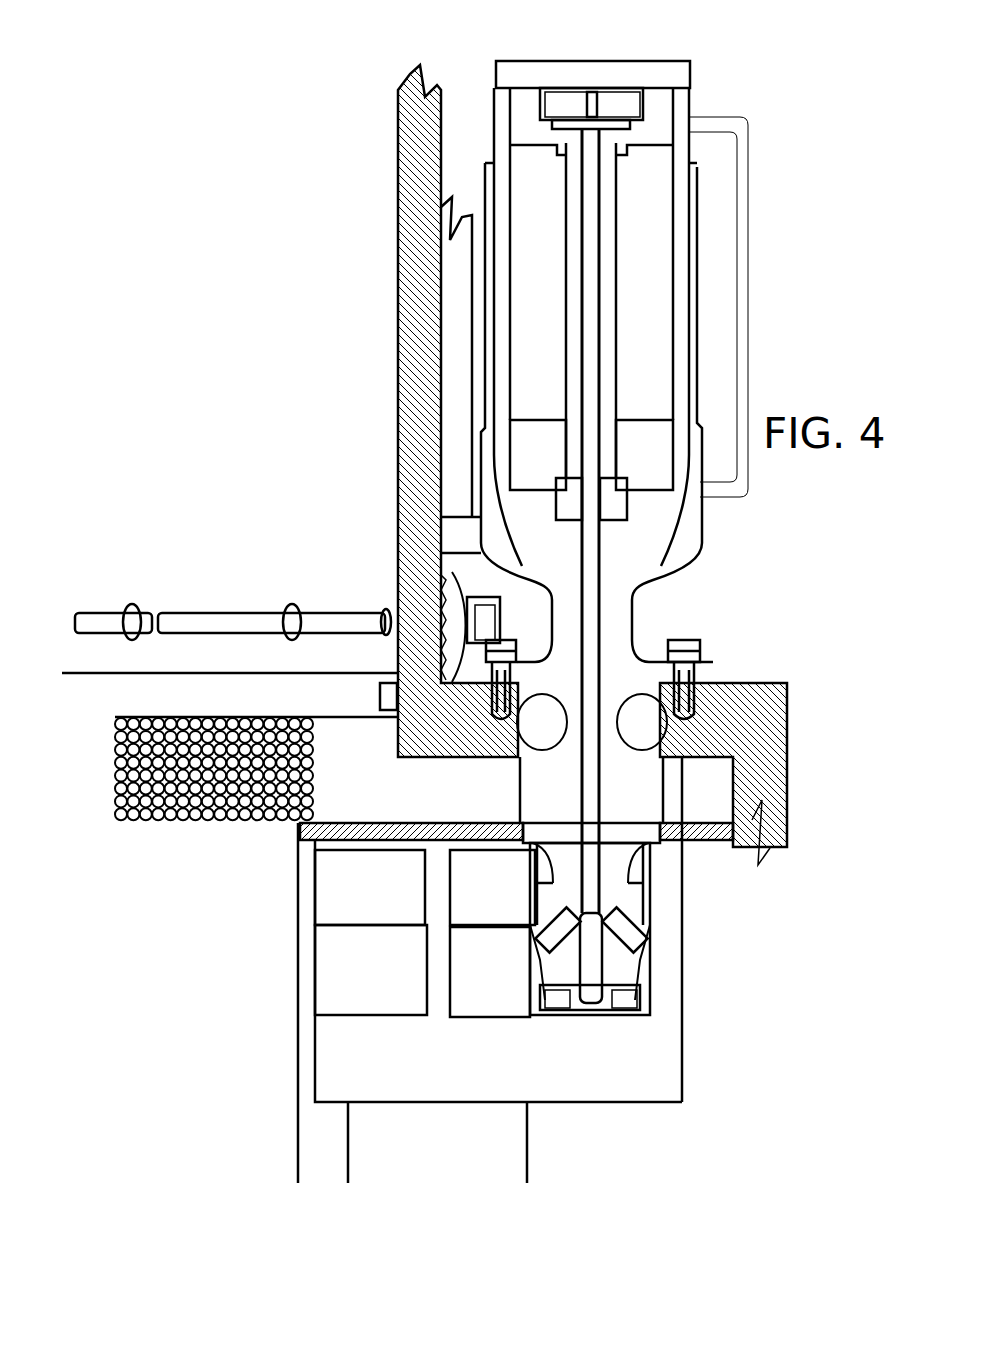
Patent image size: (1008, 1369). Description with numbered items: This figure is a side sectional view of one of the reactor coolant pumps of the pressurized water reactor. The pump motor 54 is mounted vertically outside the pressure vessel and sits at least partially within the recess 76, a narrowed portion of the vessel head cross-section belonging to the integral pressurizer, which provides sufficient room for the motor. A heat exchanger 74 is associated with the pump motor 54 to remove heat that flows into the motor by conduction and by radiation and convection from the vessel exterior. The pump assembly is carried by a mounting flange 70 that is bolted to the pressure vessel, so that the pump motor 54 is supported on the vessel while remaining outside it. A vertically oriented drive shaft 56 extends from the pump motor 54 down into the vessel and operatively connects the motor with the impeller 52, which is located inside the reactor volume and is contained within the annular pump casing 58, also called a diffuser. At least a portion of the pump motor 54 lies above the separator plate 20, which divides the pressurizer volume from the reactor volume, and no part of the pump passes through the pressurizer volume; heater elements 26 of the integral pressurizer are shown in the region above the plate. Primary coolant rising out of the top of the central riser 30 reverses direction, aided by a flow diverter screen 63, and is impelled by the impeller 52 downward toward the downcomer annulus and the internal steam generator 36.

The recess 76 is at (464, 115).
The pump motor 54 is at (636, 268).
The heat exchanger 74 is at (750, 296).
The separator plate 20 is at (216, 686).
The heater element 26 is at (268, 625).
The mounting flange 70 is at (713, 668).
The flow diverter screen 63 is at (192, 800).
The central riser 30 is at (210, 1022).
The pump casing 58 is at (486, 978).
The impeller 52 is at (625, 975).
The drive shaft 56 is at (598, 788).
The internal steam generator 36 is at (404, 1123).